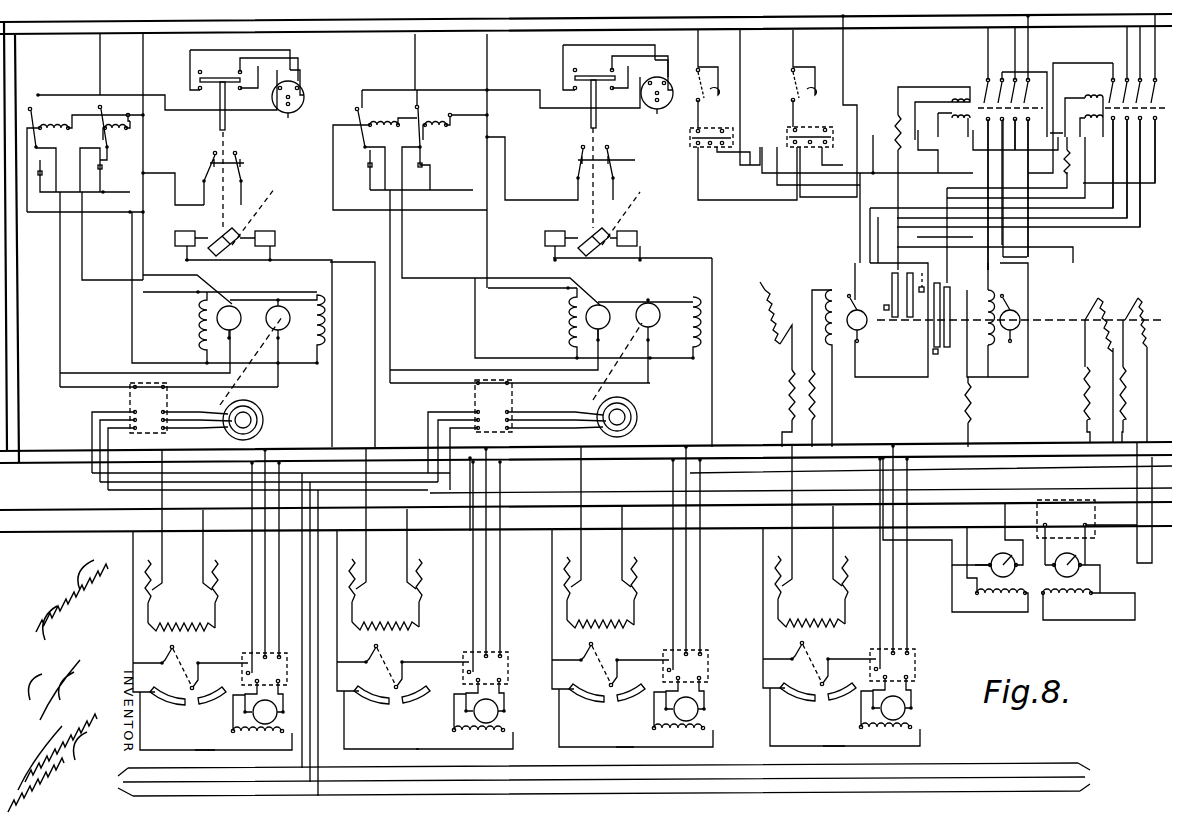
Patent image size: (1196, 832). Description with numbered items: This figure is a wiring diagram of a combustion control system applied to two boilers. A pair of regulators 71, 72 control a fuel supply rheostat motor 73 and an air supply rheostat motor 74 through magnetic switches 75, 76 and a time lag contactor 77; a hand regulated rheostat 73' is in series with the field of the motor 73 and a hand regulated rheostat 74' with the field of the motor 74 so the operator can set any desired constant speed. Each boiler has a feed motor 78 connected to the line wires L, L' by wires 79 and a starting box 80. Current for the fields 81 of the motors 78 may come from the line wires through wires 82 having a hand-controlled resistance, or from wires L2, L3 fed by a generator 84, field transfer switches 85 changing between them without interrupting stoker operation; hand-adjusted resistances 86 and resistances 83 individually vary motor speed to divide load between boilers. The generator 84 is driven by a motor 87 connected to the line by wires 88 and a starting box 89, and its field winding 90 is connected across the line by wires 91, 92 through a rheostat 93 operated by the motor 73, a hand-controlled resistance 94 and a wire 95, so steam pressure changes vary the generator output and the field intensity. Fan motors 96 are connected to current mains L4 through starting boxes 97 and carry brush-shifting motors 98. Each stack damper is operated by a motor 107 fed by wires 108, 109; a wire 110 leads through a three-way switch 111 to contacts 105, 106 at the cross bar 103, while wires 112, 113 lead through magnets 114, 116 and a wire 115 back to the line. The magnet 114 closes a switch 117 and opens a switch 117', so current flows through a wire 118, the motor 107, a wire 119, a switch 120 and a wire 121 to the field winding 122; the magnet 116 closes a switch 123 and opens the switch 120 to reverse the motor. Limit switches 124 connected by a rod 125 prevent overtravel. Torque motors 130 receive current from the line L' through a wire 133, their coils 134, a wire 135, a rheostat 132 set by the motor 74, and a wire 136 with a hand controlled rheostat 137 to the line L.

The regulator 71 is at (705, 150).
The regulator 72 is at (792, 125).
The fuel supply rheostat motor 73 is at (876, 355).
The hand regulated rheostat 73' is at (841, 368).
The air supply rheostat motor 74 is at (1006, 320).
The hand regulated rheostat 74' is at (942, 412).
The magnetic switch 75 is at (982, 96).
The magnetic switch 76 is at (1159, 118).
The time lag contactor 77 is at (935, 333).
The feed motor 78 is at (279, 707).
The wires 79 is at (278, 598).
The starting box 80 is at (556, 667).
The field 81 is at (283, 738).
The wires 82 is at (163, 568).
The resistance 83 is at (145, 578).
The generator 84 is at (1003, 556).
The field transfer switch 85 is at (186, 645).
The hand-adjusted resistance 86 is at (218, 571).
The motor 87 is at (1080, 565).
The wires 88 is at (1140, 503).
The starting box 89 is at (1087, 532).
The field winding 90 is at (1007, 597).
The wire 91 is at (967, 580).
The wire 92 is at (952, 565).
The rheostat 93 is at (770, 285).
The hand-controlled resistance 94 is at (790, 389).
The wire 95 is at (782, 437).
The fan motor 96 is at (252, 423).
The starting box 97 is at (355, 435).
The brush-shifting motor 98 is at (483, 341).
The cross bar 103 is at (222, 77).
The contacts 105 is at (199, 71).
The contacts 106 is at (200, 89).
The motor 107 is at (455, 323).
The wire 108 is at (99, 63).
The wire 109 is at (144, 147).
The wire 110 is at (46, 93).
The three-way switch 111 is at (287, 113).
The wire 112 is at (159, 194).
The wire 113 is at (527, 187).
The magnet 114 is at (222, 163).
The wire 115 is at (127, 112).
The magnet 116 is at (277, 119).
The switch 117 is at (197, 119).
The switch 117' is at (356, 172).
The wire 118 is at (61, 317).
The wire 119 is at (104, 281).
The switch 120 is at (101, 184).
The wire 121 is at (132, 342).
The field winding 122 is at (190, 320).
The switch 123 is at (98, 103).
The limit switch 124 is at (236, 158).
The rod 125 is at (614, 166).
The torque motor 130 is at (417, 192).
The rheostat 132 is at (1100, 294).
The wire 133 is at (332, 390).
The coils 134 is at (175, 235).
The wire 135 is at (375, 392).
The wire 136 is at (1086, 368).
The hand controlled rheostat 137 is at (1085, 389).
The line wire L is at (586, 248).
The line wire L' is at (586, 254).
The wire L2 is at (57, 512).
The wire L3 is at (107, 536).
The current mains L4 is at (92, 484).